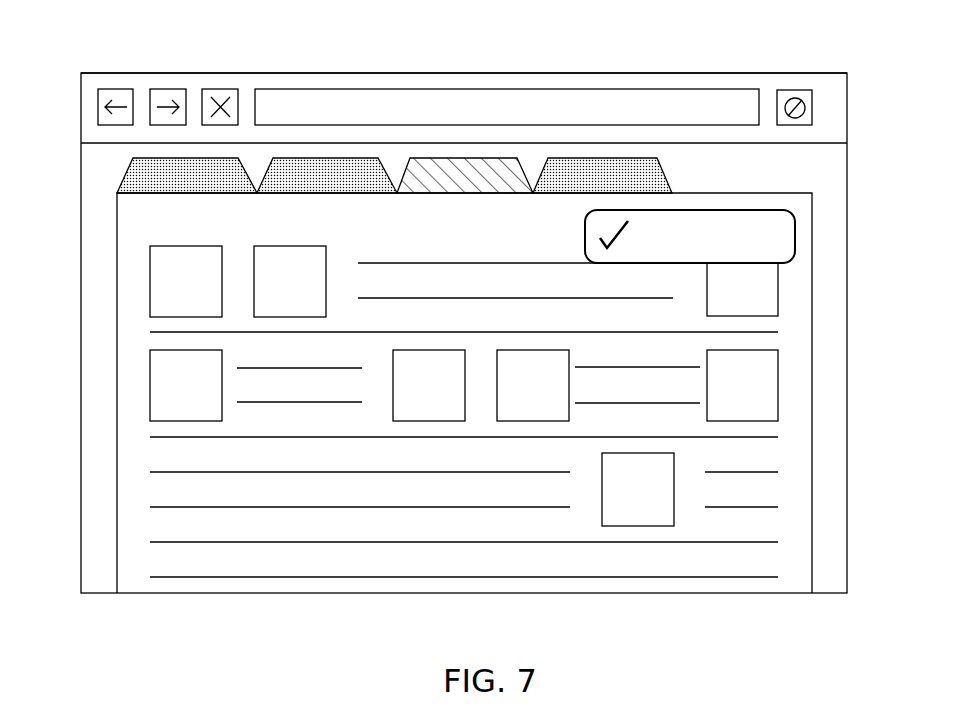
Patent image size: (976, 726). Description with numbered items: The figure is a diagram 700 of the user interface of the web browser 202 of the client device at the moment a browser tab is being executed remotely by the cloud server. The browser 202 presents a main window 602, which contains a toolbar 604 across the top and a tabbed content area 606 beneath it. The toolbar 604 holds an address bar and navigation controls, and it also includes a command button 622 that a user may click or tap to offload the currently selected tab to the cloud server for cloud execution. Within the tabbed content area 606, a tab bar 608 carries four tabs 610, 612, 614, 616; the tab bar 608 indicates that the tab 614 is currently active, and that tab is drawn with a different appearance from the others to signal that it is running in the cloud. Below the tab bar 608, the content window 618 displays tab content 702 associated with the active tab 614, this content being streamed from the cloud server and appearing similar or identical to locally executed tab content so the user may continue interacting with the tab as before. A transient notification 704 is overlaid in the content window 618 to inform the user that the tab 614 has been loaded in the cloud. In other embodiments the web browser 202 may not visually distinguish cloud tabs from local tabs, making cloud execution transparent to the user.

The web browser 202 is at (76, 56).
The diagram 700 is at (899, 84).
The main window 602 is at (787, 72).
The toolbar 604 is at (94, 97).
The tabbed content area 606 is at (96, 163).
The tab bar 608 is at (677, 183).
The tab 610 is at (187, 175).
The tab 612 is at (327, 175).
The tab 614 is at (465, 175).
The tab 616 is at (602, 175).
The content window 618 is at (812, 233).
The command button 622 is at (812, 108).
The tab content 702 is at (464, 389).
The transient notification 704 is at (770, 210).